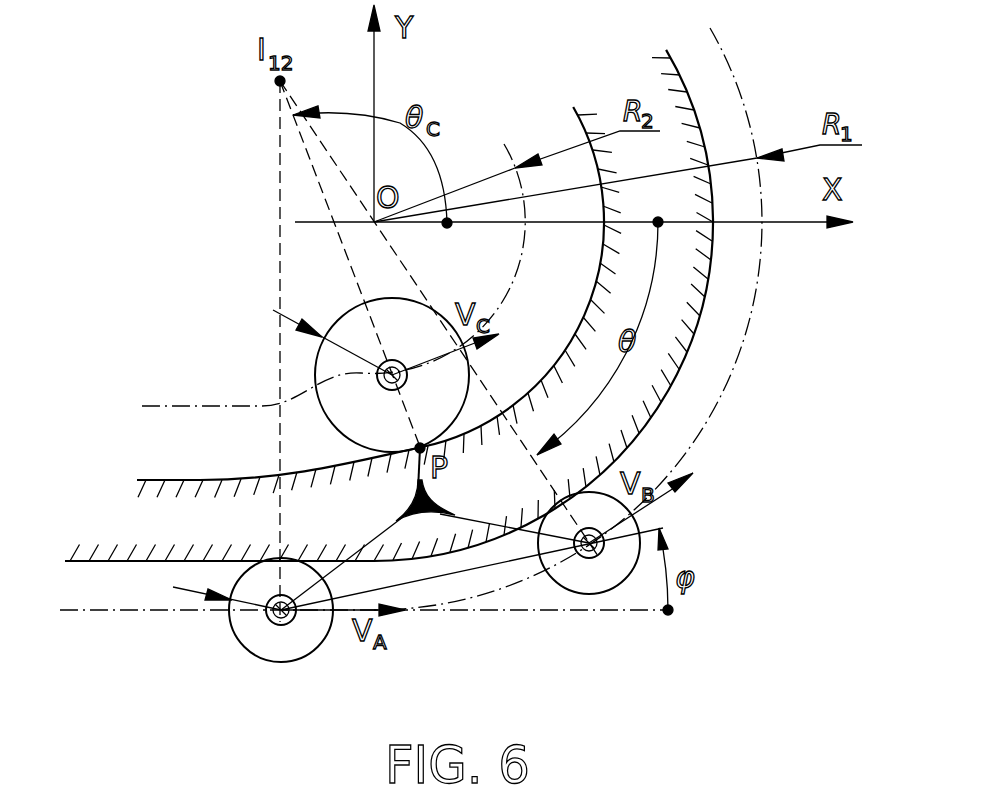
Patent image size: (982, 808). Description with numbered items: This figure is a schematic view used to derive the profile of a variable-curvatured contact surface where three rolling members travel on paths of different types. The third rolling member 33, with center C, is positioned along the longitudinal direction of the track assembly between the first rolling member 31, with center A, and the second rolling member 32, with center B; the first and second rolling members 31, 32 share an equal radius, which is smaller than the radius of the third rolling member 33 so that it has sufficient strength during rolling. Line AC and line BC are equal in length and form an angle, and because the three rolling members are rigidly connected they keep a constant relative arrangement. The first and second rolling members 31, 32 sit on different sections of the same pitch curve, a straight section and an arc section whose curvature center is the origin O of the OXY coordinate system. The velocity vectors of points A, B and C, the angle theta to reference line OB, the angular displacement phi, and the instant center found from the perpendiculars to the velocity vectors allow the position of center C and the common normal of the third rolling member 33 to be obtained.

The first rolling member 31 is at (250, 642).
The second rolling member 32 is at (620, 578).
The third rolling member 33 is at (317, 395).